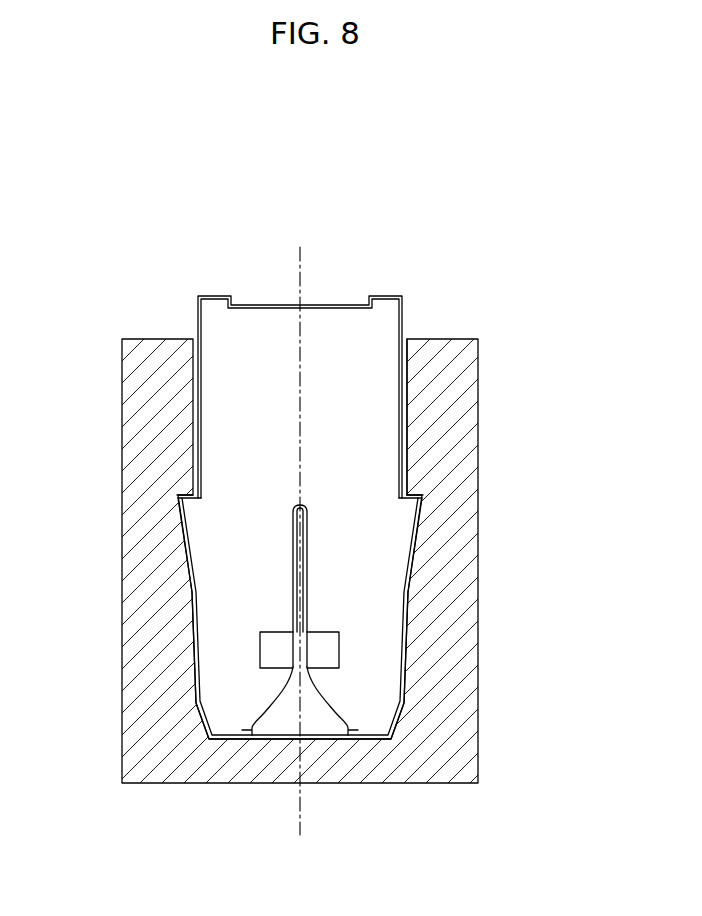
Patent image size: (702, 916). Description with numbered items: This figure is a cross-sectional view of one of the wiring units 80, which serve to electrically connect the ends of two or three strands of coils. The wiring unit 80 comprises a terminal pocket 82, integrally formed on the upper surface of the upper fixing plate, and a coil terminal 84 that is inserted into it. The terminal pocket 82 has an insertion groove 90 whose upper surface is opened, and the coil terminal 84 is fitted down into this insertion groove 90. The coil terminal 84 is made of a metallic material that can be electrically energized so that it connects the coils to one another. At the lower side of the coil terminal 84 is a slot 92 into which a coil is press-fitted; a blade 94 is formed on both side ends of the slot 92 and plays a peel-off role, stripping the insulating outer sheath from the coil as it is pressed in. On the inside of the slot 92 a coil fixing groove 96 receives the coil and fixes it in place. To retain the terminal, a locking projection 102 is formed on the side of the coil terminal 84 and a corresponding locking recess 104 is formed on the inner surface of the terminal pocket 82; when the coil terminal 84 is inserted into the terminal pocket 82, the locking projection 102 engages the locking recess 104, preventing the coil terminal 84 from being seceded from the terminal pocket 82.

The wiring unit 80 is at (222, 245).
The terminal pocket 82 is at (441, 657).
The coil terminal 84 is at (345, 337).
The insertion groove 90 is at (407, 413).
The slot 92 is at (307, 568).
The blade 94 is at (265, 712).
The coil fixing groove 96 is at (262, 650).
The locking projection 102 is at (187, 500).
The locking recess 104 is at (186, 495).